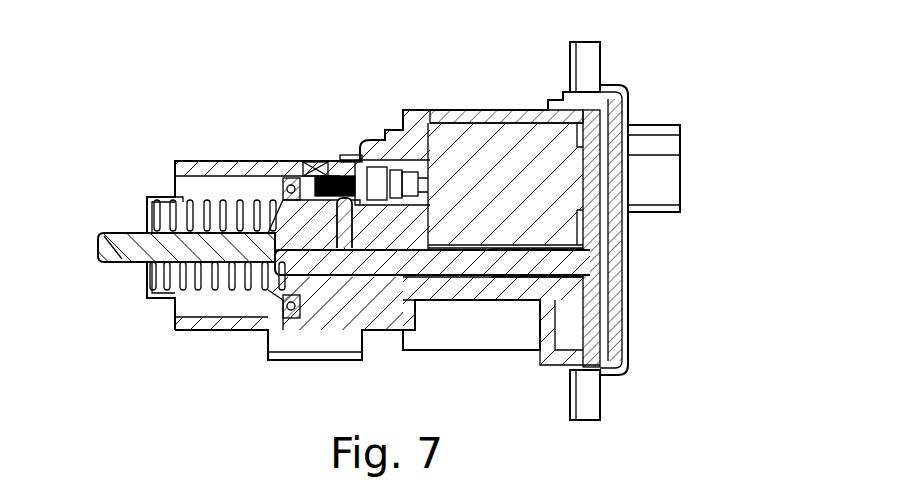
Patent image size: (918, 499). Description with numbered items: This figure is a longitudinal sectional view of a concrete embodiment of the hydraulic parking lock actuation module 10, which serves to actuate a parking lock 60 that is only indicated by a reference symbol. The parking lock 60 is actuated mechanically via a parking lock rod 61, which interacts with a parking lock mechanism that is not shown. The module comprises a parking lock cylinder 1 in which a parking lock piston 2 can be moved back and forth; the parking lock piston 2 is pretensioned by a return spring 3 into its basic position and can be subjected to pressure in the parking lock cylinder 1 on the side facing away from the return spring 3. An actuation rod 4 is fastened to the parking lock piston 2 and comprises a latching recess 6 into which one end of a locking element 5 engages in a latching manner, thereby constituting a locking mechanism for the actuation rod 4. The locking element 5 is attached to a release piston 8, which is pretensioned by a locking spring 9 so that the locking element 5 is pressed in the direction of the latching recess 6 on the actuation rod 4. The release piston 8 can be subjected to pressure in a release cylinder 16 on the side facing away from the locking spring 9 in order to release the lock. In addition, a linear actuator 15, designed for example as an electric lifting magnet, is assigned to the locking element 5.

The parking lock cylinder 1 is at (203, 158).
The parking lock piston 2 is at (284, 174).
The return spring 3 is at (215, 290).
The actuation rod 4 is at (345, 268).
The locking element 5 is at (346, 224).
The latching recess 6 is at (431, 246).
The release piston 8 is at (360, 164).
The locking spring 9 is at (318, 163).
The hydraulic parking lock actuation module 10 is at (614, 66).
The linear actuator 15 is at (547, 187).
The release cylinder 16 is at (386, 166).
The parking lock 60 is at (78, 261).
The parking lock rod 61 is at (116, 242).